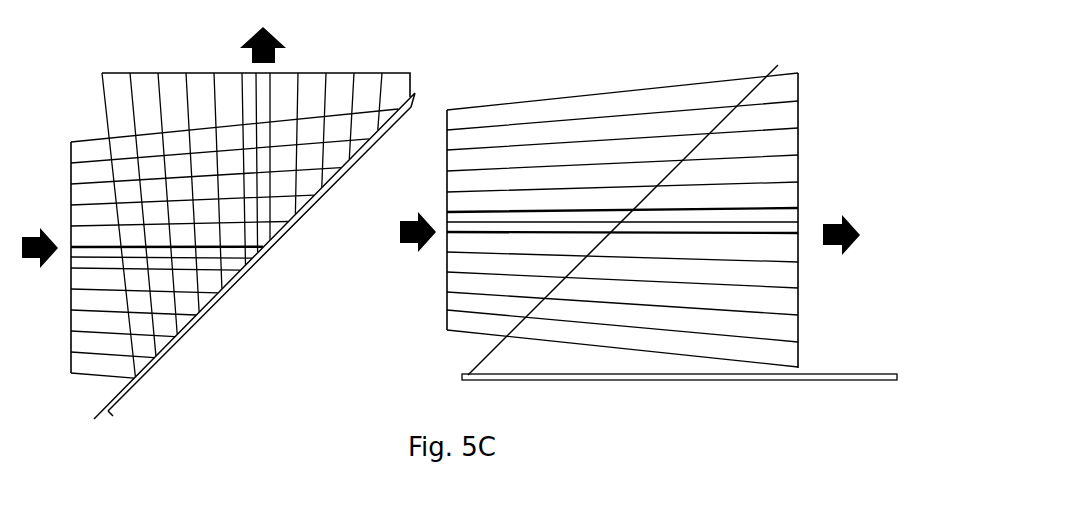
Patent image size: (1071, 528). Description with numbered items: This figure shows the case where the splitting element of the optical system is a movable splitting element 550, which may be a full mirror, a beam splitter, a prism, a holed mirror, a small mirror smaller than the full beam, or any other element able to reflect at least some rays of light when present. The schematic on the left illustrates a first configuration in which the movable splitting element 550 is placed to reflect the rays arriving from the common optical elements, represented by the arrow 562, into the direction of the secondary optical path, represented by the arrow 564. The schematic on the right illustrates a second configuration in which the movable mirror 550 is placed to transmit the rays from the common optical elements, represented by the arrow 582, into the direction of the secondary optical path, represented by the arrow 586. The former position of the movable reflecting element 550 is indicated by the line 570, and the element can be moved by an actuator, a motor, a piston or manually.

The movable splitting element 550 is at (498, 247).
The arrow 562 is at (40, 237).
The arrow 564 is at (245, 45).
The line 570 is at (623, 210).
The arrow 582 is at (418, 221).
The arrow 586 is at (841, 226).